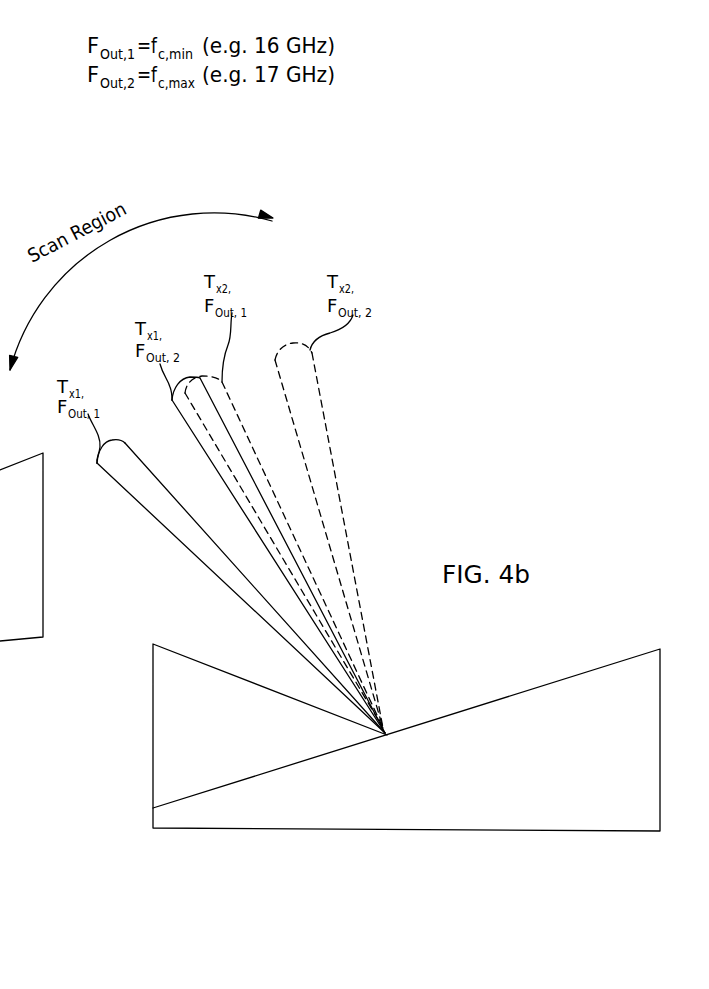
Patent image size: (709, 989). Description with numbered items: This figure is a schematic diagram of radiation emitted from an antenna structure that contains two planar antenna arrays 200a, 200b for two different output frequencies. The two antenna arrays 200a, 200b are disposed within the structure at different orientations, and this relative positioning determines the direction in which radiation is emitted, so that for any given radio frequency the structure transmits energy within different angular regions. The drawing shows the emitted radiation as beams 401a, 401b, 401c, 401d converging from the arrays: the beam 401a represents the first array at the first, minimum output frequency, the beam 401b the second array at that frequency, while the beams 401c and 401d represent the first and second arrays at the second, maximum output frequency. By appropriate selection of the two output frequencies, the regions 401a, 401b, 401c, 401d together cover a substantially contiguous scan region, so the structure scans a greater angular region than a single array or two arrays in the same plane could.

The angular region 401a is at (236, 573).
The angular region 401b is at (284, 520).
The angular region 401c is at (272, 548).
The angular region 401d is at (329, 521).
The antenna array 200a is at (270, 726).
The antenna array 200b is at (406, 740).